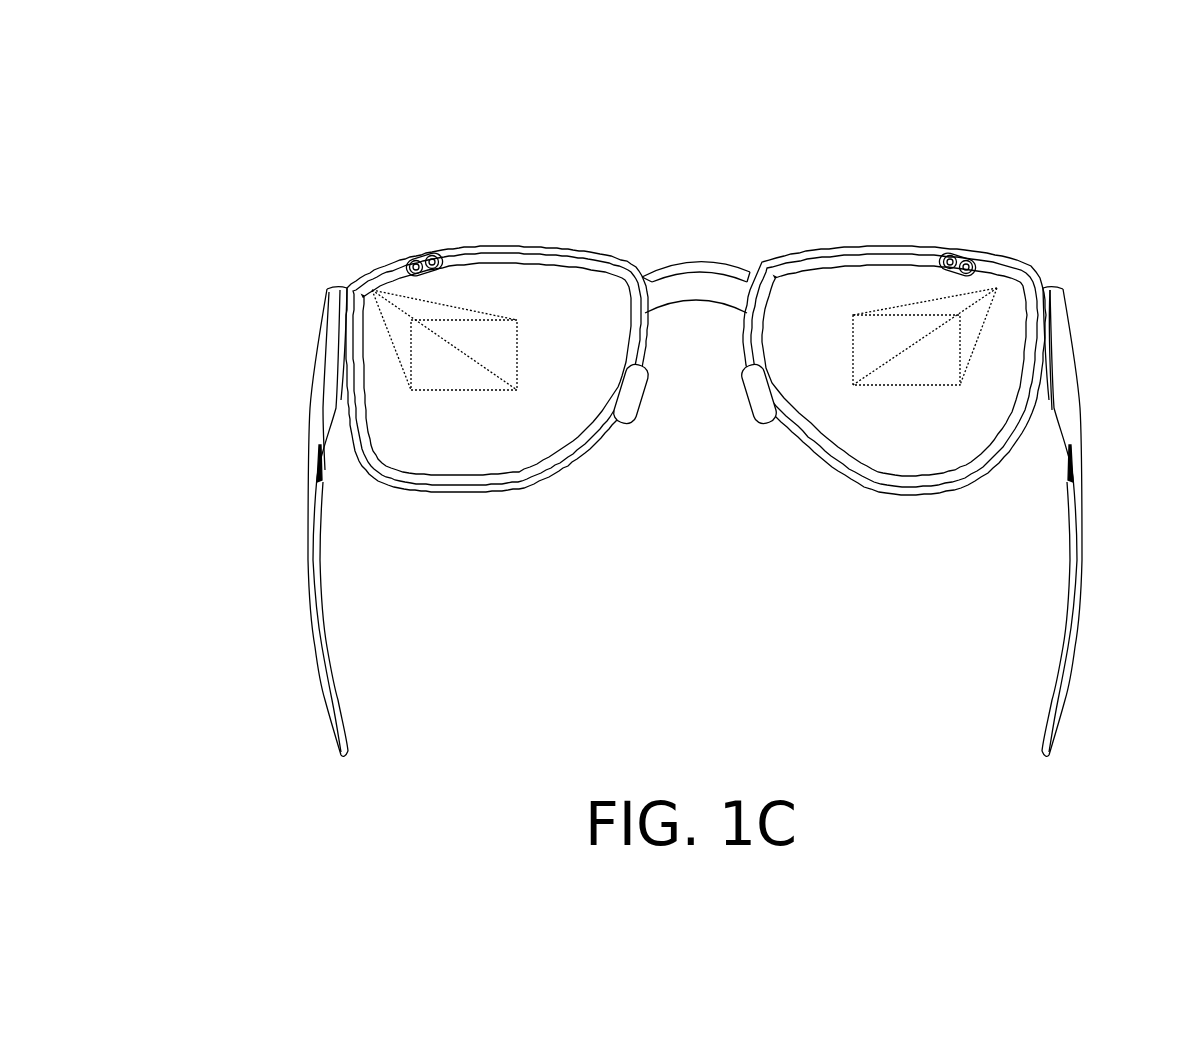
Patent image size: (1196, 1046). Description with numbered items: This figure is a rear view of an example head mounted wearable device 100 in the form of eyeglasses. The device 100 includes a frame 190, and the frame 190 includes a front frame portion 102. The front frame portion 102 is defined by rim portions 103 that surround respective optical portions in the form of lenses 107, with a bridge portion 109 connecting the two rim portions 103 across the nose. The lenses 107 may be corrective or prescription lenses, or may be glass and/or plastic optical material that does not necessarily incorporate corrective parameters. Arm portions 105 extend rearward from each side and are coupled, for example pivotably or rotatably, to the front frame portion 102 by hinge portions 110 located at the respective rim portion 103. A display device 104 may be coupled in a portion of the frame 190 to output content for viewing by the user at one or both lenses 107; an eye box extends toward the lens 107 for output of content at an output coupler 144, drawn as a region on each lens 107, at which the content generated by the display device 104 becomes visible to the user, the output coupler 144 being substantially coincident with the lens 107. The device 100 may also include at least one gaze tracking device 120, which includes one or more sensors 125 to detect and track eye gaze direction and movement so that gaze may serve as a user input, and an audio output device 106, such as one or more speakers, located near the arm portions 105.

The head mounted wearable device 100 is at (665, 429).
The front frame portion 102 is at (864, 243).
The rim portions 103 is at (408, 483).
The display device 104 is at (366, 282).
The arm portions 105 is at (318, 647).
The audio output device 106 is at (325, 473).
The lenses 107 is at (473, 433).
The bridge portion 109 is at (666, 268).
The hinge portions 110 is at (1065, 297).
The gaze tracking device 120 is at (416, 261).
The sensors 125 is at (428, 258).
The output coupler 144 is at (511, 322).
The frame 190 is at (292, 331).